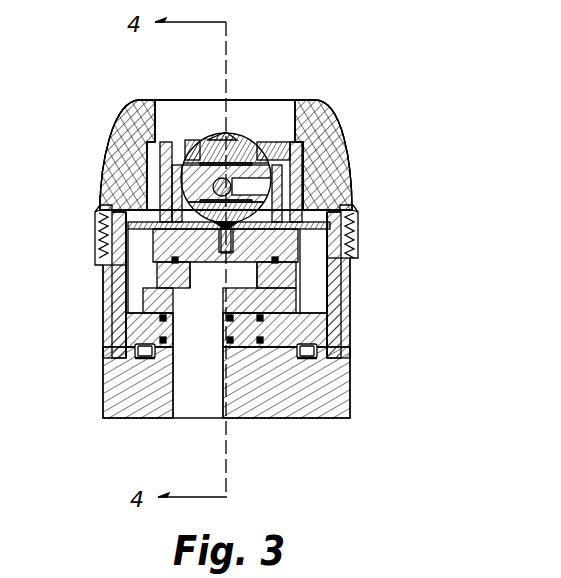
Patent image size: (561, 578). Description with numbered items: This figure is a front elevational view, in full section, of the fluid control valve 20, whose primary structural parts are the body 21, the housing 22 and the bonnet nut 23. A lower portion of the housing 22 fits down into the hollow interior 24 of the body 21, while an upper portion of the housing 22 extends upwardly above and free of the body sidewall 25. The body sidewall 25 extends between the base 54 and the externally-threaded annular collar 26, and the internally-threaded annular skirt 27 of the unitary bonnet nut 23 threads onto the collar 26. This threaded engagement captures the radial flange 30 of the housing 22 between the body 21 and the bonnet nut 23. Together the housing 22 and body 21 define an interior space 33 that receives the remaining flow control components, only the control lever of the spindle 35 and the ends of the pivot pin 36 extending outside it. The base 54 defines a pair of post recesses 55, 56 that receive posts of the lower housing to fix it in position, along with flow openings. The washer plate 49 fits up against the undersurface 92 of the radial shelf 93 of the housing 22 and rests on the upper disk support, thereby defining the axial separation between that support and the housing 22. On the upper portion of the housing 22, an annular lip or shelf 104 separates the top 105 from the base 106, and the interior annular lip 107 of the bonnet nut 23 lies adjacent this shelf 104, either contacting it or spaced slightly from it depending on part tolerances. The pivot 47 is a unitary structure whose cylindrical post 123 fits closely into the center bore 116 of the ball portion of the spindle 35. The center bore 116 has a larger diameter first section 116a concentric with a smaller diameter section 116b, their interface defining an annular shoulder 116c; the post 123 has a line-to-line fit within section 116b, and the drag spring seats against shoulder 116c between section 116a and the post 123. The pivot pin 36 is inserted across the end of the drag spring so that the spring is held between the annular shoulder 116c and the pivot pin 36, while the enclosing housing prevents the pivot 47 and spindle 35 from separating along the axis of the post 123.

The fluid control valve 20 is at (428, 145).
The body 21 is at (330, 380).
The housing 22 is at (122, 150).
The bonnet nut 23 is at (327, 150).
The hollow interior 24 is at (110, 283).
The body sidewall 25 is at (342, 285).
The externally-threaded annular collar 26 is at (356, 245).
The internally-threaded annular skirt 27 is at (100, 222).
The radial flange 30 is at (100, 205).
The interior space 33 is at (318, 118).
The spindle 35 is at (228, 262).
The pivot pin 36 is at (213, 340).
The pivot 47 is at (300, 153).
The washer plate 49 is at (340, 272).
The base 54 is at (258, 420).
The post recess 55 is at (318, 352).
The post recess 56 is at (122, 355).
The undersurface 92 is at (352, 206).
The radial shelf 93 is at (330, 205).
The annular lip or shelf 104 is at (135, 112).
The top 105 is at (262, 145).
The base 106 is at (128, 148).
The interior annular lip 107 is at (279, 142).
The center bore 116 is at (240, 140).
The first section 116a is at (218, 138).
The smaller diameter section 116b is at (178, 142).
The annular shoulder 116c is at (198, 140).
The cylindrical post 123 is at (112, 182).